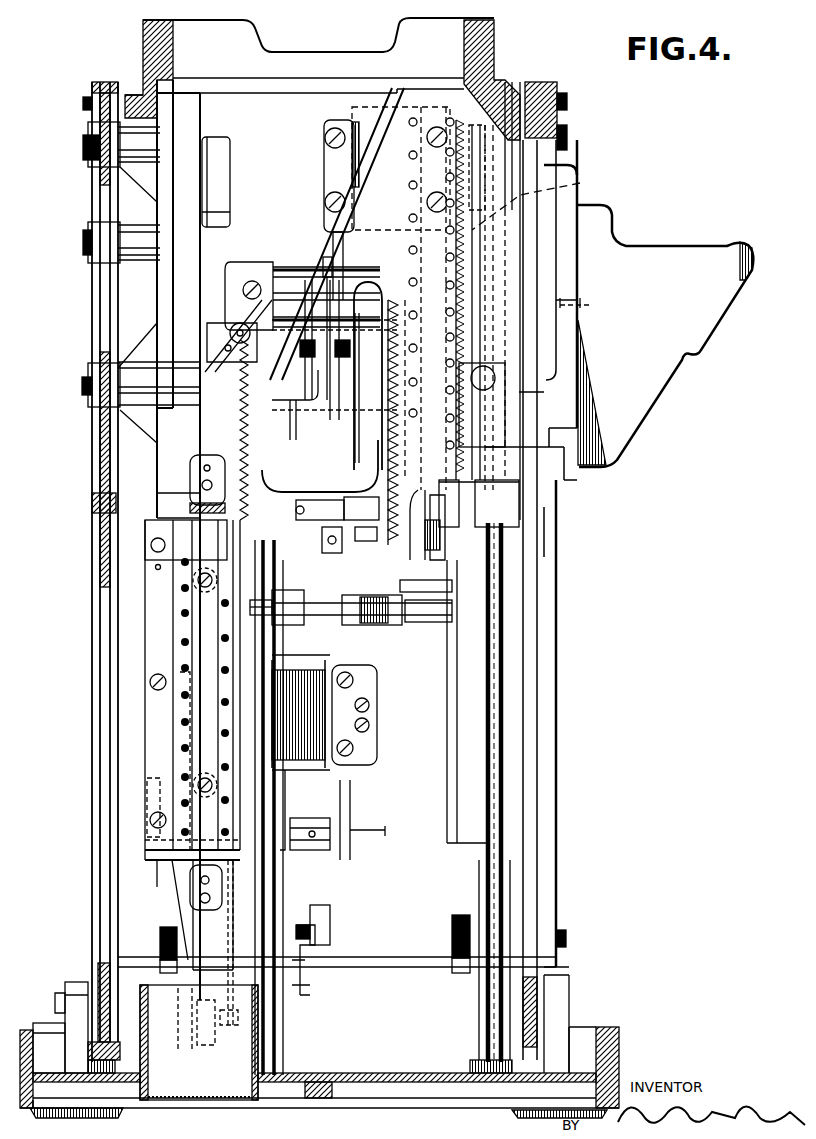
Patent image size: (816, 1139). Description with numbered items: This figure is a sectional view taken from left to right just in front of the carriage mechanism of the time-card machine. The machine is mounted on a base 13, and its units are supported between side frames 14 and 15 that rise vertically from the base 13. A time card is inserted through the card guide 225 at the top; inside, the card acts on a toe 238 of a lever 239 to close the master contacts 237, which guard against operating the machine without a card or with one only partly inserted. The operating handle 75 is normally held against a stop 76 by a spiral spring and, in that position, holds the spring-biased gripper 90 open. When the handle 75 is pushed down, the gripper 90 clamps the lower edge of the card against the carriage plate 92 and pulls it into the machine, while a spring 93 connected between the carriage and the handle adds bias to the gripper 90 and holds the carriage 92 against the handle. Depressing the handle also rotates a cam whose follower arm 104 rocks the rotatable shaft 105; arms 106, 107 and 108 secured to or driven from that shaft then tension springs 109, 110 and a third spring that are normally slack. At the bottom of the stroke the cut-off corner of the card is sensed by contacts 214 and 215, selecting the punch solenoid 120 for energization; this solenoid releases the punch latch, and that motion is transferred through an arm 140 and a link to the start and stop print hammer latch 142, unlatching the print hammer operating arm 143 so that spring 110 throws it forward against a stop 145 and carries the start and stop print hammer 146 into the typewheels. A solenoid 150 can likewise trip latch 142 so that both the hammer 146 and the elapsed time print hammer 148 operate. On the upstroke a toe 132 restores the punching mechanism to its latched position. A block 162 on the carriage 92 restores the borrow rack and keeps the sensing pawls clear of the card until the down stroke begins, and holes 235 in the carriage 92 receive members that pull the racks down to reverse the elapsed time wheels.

The base 13 is at (618, 1045).
The side frame 14 is at (100, 748).
The side frame 15 is at (556, 748).
The operating handle 75 is at (638, 256).
The stop 76 is at (500, 130).
The gripper 90 is at (337, 508).
The carriage plate 92 is at (318, 282).
The spring 93 is at (540, 177).
The cam follower arm 104 is at (425, 575).
The rotatable shaft 105 is at (292, 605).
The arm 106 is at (392, 625).
The arm 107 is at (222, 618).
The arm 108 is at (195, 1025).
The spring 109 is at (388, 548).
The spring 110 is at (238, 448).
The punch solenoid 120 is at (308, 698).
The toe 132 is at (589, 305).
The arm 140 is at (333, 860).
The start and stop print hammer latch 142 is at (340, 290).
The print hammer operating arm 143 is at (336, 350).
The stop 145 is at (380, 422).
The start and stop print hammer 146 is at (292, 474).
The elapsed time print hammer 148 is at (336, 376).
The solenoid 150 is at (352, 145).
The block 162 is at (452, 592).
The contacts 214 is at (160, 948).
The contacts 215 is at (452, 940).
The card guide 225 is at (398, 28).
The holes 235 is at (410, 214).
The master contacts 237 is at (258, 995).
The toe 238 is at (318, 935).
The lever 239 is at (308, 997).